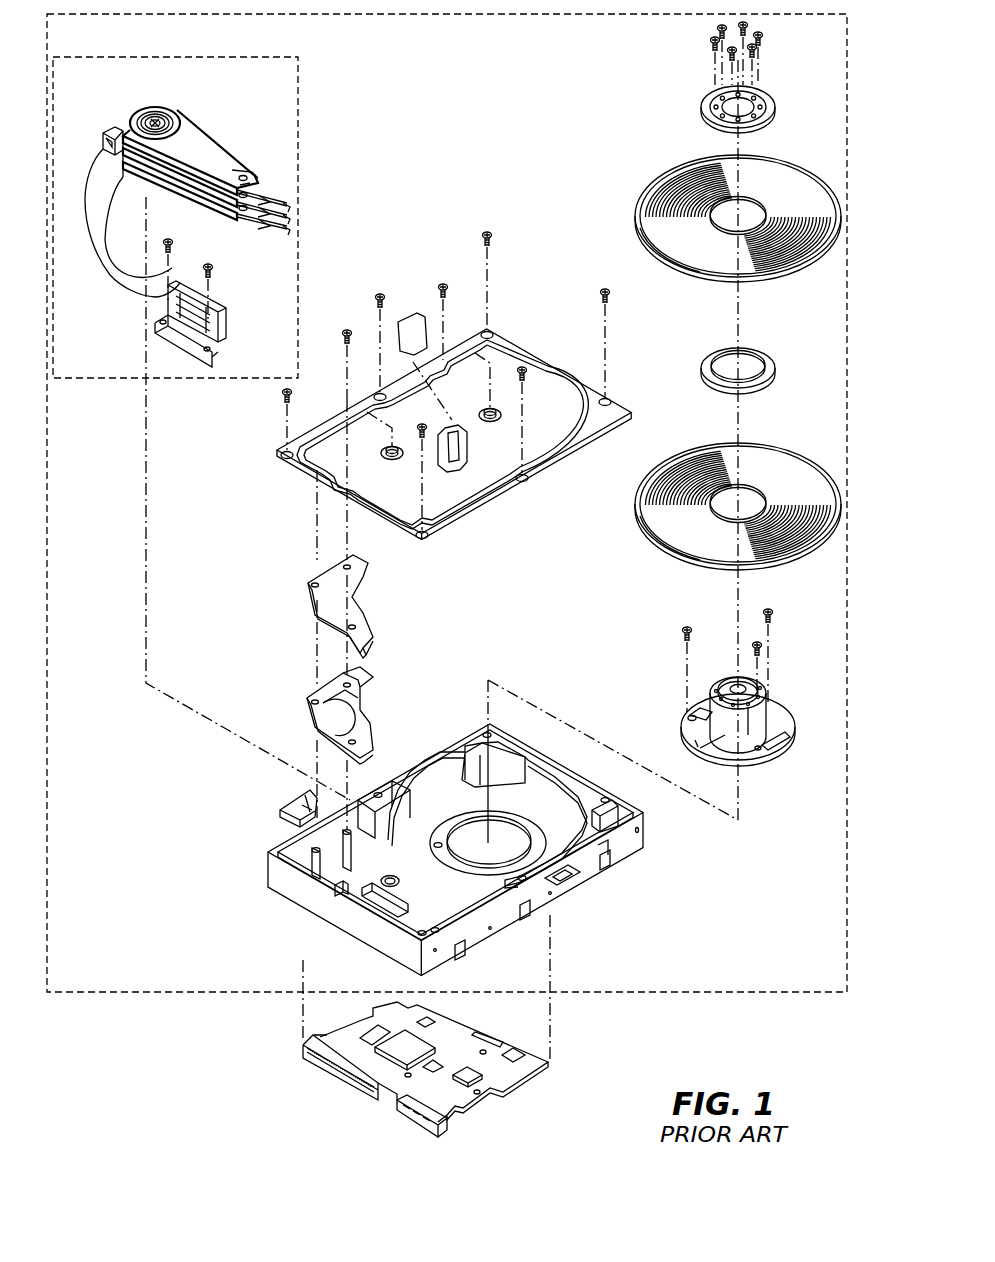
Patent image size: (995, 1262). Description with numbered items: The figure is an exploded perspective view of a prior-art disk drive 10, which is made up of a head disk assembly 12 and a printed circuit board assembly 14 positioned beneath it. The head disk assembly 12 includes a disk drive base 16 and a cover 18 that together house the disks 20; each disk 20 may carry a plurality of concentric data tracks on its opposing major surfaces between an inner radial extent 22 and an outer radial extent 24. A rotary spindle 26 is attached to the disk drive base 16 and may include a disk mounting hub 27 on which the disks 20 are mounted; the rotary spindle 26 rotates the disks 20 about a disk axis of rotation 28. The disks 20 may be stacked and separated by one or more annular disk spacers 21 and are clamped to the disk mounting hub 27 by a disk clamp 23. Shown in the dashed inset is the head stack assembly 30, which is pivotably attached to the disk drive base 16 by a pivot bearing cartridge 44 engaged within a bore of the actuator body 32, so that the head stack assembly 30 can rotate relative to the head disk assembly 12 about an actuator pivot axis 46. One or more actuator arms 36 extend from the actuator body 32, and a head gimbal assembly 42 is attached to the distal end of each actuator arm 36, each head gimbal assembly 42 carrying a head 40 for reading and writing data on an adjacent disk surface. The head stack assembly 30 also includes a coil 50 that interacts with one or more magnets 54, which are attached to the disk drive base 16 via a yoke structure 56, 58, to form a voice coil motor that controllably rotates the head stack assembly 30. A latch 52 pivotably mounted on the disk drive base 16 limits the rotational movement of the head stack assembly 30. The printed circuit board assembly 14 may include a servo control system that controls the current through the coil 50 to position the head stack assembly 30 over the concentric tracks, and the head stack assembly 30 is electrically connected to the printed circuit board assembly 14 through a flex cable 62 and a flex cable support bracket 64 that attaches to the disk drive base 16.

The disk drive 10 is at (127, 1047).
The head disk assembly 12 is at (647, 993).
The printed circuit board assembly 14 is at (522, 1083).
The disk drive base 16 is at (583, 888).
The cover 18 is at (496, 330).
The disks 20 is at (792, 175).
The annular disk spacers 21 is at (702, 368).
The inner radial extent 22 is at (765, 202).
The disk clamp 23 is at (767, 90).
The outer radial extent 24 is at (682, 268).
The rotary spindle 26 is at (780, 747).
The disk mounting hub 27 is at (713, 707).
The disk axis of rotation 28 is at (738, 302).
The head stack assembly 30 is at (213, 379).
The actuator body 32 is at (147, 107).
The actuator arms 36 is at (200, 140).
The head 40 is at (282, 233).
The head gimbal assemblies 42 is at (253, 188).
The pivot bearing cartridge 44 is at (163, 112).
The actuator pivot axis 46 is at (146, 570).
The coil 50 is at (115, 128).
The latch 52 is at (282, 810).
The magnets 54 is at (363, 693).
The yoke structure 56 is at (310, 602).
The yoke structure 58 is at (317, 712).
The flex cable 62 is at (117, 287).
The flex cable support bracket 64 is at (222, 342).